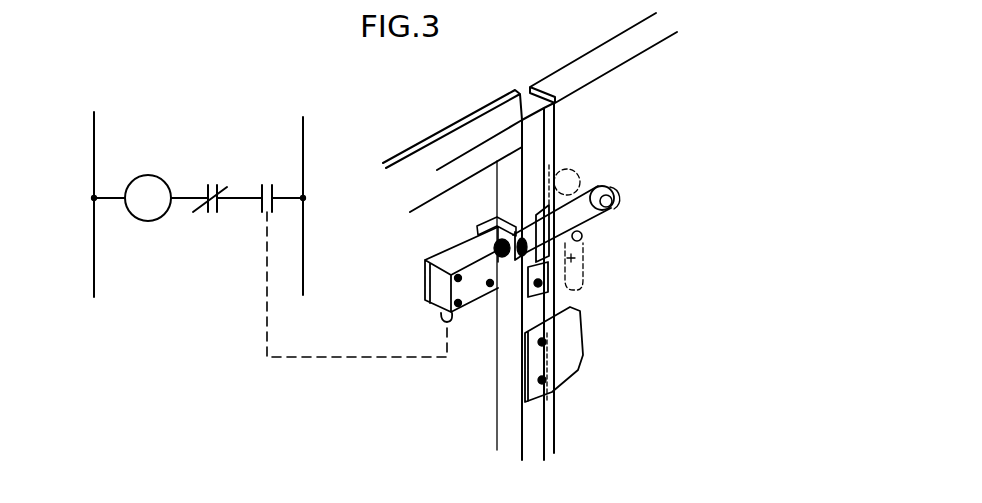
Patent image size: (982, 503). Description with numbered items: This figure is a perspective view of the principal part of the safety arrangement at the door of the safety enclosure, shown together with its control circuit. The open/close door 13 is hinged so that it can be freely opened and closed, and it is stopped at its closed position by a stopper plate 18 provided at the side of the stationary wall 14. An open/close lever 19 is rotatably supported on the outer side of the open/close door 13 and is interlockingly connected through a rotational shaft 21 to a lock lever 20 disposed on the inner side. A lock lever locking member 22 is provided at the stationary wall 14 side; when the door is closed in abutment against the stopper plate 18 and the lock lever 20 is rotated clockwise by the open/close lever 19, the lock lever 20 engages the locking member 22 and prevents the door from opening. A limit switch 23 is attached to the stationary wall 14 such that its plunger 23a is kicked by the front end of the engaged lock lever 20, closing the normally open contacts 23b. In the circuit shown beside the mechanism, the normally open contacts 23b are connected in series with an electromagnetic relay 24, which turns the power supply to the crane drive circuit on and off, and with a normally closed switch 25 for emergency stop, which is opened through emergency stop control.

The open/close door 13 is at (572, 75).
The stationary wall 14 is at (455, 148).
The stopper plate 18 is at (572, 342).
The open/close lever 19 is at (572, 258).
The lock lever 20 is at (597, 188).
The rotational shaft 21 is at (615, 204).
The lock lever locking member 22 is at (580, 183).
The limit switch 23 is at (474, 290).
The plunger 23a is at (485, 222).
The normally open contacts 23b is at (265, 183).
The electromagnetic relay 24 is at (149, 190).
The normally closed switch 25 is at (210, 213).